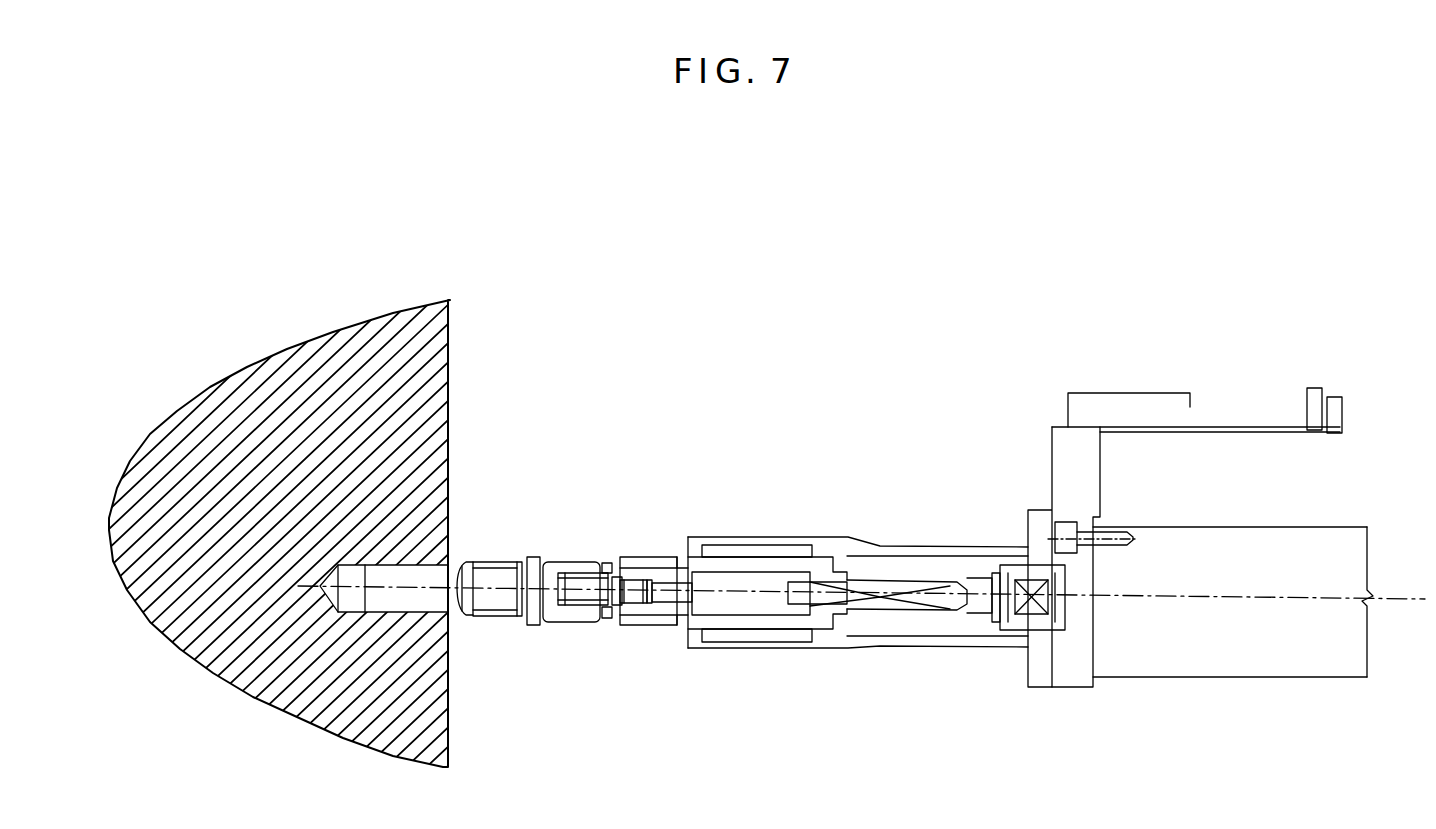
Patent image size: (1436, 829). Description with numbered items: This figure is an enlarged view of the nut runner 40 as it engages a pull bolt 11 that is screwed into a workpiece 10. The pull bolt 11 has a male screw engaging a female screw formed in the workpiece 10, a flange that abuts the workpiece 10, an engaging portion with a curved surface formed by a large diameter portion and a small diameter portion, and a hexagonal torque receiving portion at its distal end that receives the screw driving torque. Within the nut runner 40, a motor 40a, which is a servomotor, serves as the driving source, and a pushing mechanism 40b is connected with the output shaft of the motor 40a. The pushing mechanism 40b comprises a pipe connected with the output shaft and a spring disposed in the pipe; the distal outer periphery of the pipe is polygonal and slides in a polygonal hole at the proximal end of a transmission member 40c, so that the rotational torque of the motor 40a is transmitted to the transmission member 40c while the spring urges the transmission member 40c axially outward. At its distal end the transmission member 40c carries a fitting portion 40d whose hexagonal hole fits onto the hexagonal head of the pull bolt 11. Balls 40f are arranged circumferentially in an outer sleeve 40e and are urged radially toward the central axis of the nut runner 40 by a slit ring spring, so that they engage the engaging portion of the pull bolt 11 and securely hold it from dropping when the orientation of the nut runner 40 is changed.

The workpiece 10 is at (444, 341).
The pull bolt 11 is at (493, 617).
The nut runner 40 is at (933, 316).
The motor 40a is at (1260, 663).
The pushing mechanism 40b is at (905, 573).
The transmission member 40c is at (753, 603).
The fitting portion 40d is at (640, 610).
The outer sleeve 40e is at (637, 563).
The balls 40f is at (600, 563).